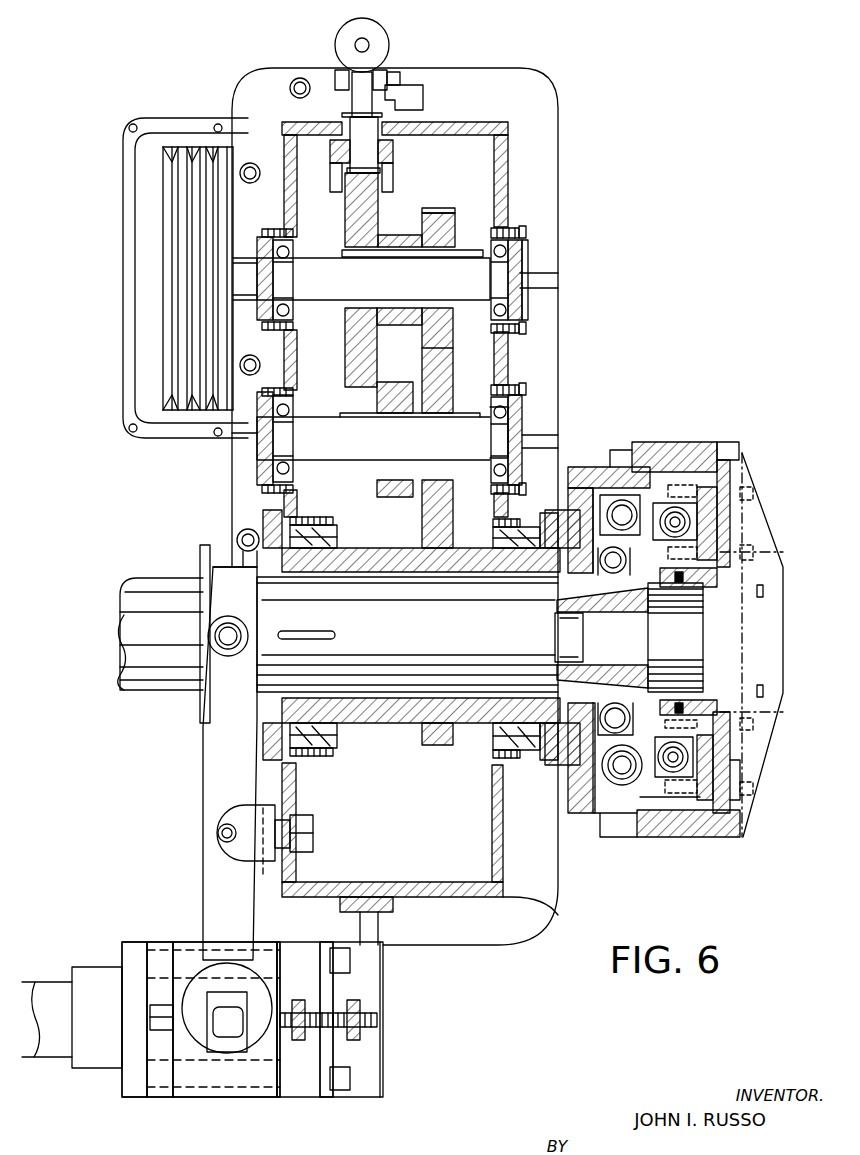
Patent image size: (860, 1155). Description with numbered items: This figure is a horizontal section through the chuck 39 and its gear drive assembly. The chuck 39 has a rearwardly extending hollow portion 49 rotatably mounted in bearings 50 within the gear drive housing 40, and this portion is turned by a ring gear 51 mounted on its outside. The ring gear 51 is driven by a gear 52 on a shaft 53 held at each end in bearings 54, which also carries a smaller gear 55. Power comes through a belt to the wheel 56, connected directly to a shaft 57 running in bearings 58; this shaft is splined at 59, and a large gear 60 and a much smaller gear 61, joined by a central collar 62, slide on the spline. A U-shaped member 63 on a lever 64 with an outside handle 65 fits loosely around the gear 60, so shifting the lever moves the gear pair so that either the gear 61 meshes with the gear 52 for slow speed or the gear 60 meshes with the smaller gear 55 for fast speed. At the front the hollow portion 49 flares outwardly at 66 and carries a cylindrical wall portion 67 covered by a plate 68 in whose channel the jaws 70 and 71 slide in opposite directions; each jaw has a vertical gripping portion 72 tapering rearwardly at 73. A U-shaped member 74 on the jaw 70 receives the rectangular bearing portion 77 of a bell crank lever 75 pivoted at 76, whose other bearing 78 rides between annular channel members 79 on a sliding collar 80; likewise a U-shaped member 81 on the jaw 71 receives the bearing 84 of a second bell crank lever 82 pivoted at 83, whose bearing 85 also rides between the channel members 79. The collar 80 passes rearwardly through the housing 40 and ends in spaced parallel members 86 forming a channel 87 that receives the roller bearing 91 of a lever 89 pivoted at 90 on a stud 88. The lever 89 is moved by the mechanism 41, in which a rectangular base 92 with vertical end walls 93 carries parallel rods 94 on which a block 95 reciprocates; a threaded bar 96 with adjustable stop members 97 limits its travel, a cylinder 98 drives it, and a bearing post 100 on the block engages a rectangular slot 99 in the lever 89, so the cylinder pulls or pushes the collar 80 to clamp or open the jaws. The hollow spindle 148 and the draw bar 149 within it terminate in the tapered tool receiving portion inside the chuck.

The chuck 39 is at (686, 418).
The gear drive housing 40 is at (550, 906).
The mechanism 41 is at (195, 1100).
The rearwardly extending hollow portion 49 is at (388, 716).
The bearings 50 is at (334, 538).
The ring gear 51 is at (432, 746).
The gear 52 is at (440, 508).
The shaft 53 is at (466, 432).
The bearings 54 is at (503, 432).
The smaller gear 55 is at (380, 485).
The wheel 56 is at (172, 150).
The shaft 57 is at (313, 282).
The bearings 58 is at (523, 246).
The spline 59 is at (466, 250).
The gear 60 is at (373, 210).
The gear 61 is at (447, 231).
The central collar 62 is at (393, 240).
The U-shaped member 63 is at (390, 168).
The lever 64 is at (386, 95).
The handle 65 is at (338, 38).
The flared front end 66 is at (588, 808).
The cylindrical wall portion 67 is at (720, 822).
The plate 68 is at (718, 449).
The jaw 70 is at (760, 541).
The jaw 71 is at (755, 776).
The vertical gripping portion 72 is at (763, 592).
The tapering side 73 is at (762, 522).
The U-shaped member 74 is at (685, 488).
The bell crank lever 75 is at (660, 517).
The pivot 76 is at (620, 509).
The rectangular bearing portion 77 is at (673, 520).
The rectangular bearing 78 is at (605, 554).
The annular channel members 79 is at (577, 545).
The collar 80 is at (622, 786).
The U-shaped member 81 is at (690, 797).
The second bell crank lever 82 is at (624, 778).
The pivot 83 is at (641, 800).
The bearing 84 is at (675, 763).
The bearing 85 is at (557, 768).
The spaced parallel members 86 is at (204, 560).
The channel 87 is at (217, 568).
The stud 88 is at (265, 854).
The lever 89 is at (220, 778).
The pivot 90 is at (218, 838).
The roller bearing 91 is at (226, 646).
The rectangular base 92 is at (286, 1100).
The rectangular vertical end walls 93 is at (136, 945).
The rods 94 is at (160, 945).
The block 95 is at (244, 1080).
The threaded bar 96 is at (382, 1020).
The adjustable stop members 97 is at (296, 948).
The cylinder 98 is at (58, 1040).
The rectangular slot 99 is at (246, 1036).
The bearing post 100 is at (226, 1028).
The spindle 148 is at (118, 686).
The draw bar 149 is at (578, 636).